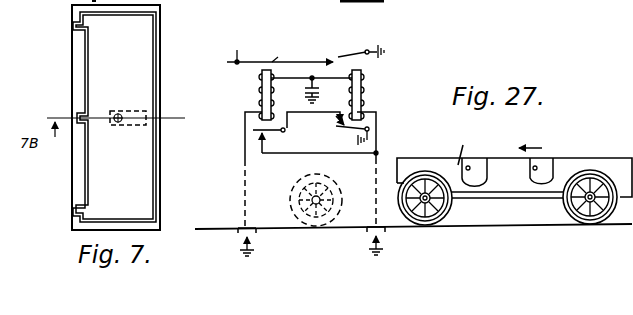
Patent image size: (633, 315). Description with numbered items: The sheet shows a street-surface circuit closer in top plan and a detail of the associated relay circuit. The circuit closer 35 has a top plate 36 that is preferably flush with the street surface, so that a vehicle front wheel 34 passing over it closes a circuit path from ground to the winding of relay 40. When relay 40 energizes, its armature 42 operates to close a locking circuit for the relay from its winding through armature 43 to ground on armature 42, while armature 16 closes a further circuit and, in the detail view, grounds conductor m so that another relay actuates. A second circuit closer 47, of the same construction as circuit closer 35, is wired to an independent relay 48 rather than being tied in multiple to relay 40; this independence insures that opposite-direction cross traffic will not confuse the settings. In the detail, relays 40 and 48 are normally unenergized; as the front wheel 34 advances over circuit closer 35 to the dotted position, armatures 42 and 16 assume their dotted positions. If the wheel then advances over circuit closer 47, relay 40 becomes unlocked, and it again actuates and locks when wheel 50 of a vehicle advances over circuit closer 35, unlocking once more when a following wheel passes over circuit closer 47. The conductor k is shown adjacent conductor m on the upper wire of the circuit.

In FIG. 7, the top plate 36 is at (116, 117).
In FIG. 27, the conductor m is at (280, 54).
In FIG. 27, the conductor point k is at (281, 52).
In FIG. 27, the armature 16 is at (345, 58).
In FIG. 27, the relay 48 is at (261, 86).
In FIG. 27, the relay 40 is at (364, 88).
In FIG. 27, the armature 43 is at (275, 131).
In FIG. 27, the armature 42 is at (350, 131).
In FIG. 27, the front wheel 34 is at (323, 181).
In FIG. 27, the circuit closer 47 is at (252, 228).
In FIG. 27, the circuit closer 35 is at (377, 226).
In FIG. 27, the wheel 50 is at (566, 205).